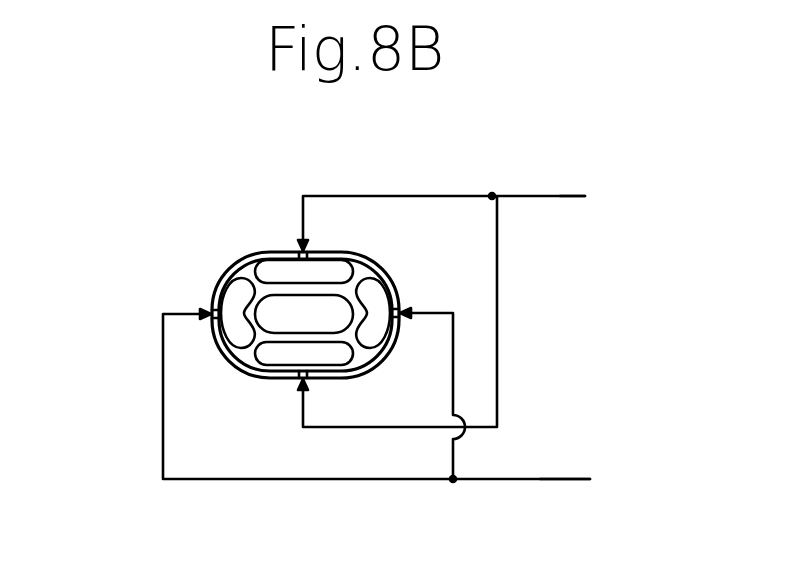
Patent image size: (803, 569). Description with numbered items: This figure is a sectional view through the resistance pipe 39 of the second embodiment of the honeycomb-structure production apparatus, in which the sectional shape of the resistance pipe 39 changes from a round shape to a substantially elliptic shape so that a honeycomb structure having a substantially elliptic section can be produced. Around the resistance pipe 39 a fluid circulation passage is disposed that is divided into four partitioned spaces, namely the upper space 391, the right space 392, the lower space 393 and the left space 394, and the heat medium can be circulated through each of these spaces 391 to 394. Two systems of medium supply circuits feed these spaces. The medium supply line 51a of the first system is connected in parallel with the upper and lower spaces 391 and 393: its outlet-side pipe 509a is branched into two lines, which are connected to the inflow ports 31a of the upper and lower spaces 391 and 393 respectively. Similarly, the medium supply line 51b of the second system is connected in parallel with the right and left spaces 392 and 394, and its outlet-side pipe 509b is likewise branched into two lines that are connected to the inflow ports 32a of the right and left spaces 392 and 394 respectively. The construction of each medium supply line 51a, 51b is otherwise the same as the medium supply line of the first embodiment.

The resistance pipe 39 is at (240, 257).
The inflow port 31a is at (295, 252).
The inflow port 32a is at (212, 303).
The upper space 391 is at (328, 268).
The right space 392 is at (375, 288).
The lower space 393 is at (267, 358).
The left space 394 is at (238, 290).
The pipe of the medium supply line on the outlet side 509a is at (530, 192).
The pipe of the medium supply line on the outlet side 509b is at (492, 480).
The medium supply line 51a is at (563, 190).
The medium supply line 51b is at (557, 481).